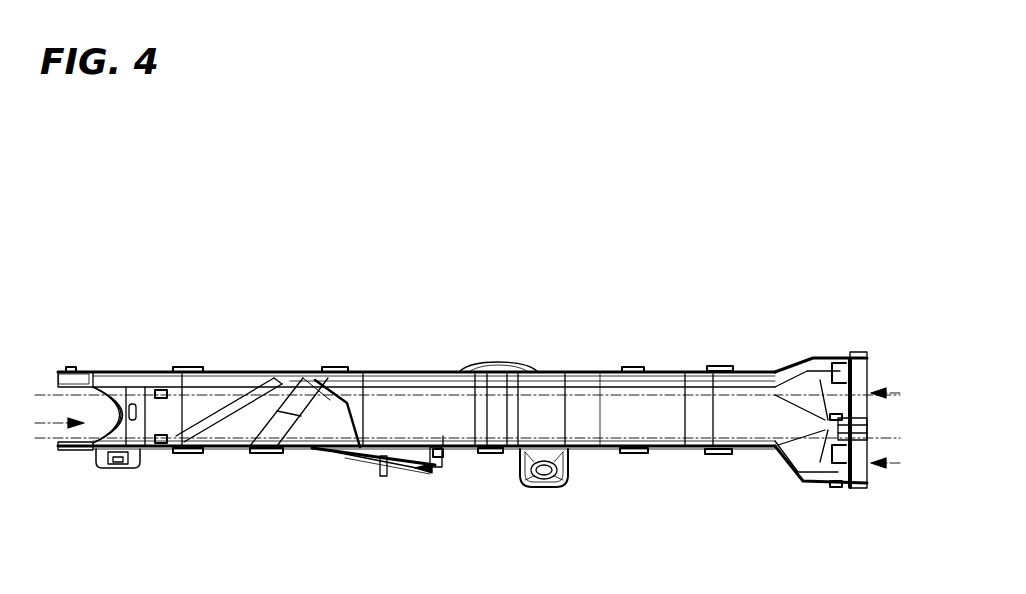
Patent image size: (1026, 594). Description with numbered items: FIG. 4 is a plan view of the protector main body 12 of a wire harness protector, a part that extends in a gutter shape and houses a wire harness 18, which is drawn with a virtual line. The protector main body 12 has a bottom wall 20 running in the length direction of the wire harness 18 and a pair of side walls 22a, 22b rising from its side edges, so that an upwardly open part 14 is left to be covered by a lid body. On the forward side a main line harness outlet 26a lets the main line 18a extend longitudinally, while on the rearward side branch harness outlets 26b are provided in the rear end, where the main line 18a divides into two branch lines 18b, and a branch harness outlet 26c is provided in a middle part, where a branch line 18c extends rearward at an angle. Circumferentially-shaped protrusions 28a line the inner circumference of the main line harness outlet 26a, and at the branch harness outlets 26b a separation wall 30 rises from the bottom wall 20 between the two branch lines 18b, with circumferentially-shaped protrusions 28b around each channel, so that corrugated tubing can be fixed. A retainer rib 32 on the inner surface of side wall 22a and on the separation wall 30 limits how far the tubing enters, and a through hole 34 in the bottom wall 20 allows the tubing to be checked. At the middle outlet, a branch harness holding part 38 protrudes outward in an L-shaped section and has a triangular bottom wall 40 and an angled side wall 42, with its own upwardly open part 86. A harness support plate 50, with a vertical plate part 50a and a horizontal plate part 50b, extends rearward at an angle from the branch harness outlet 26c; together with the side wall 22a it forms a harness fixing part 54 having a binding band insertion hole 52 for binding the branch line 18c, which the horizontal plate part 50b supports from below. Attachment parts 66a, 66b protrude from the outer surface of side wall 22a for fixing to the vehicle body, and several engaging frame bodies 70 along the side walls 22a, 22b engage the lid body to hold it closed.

The protector main body 12 is at (490, 240).
The upwardly open part 14 is at (610, 440).
The wire harness 18 is at (640, 405).
The main line 18a is at (62, 418).
The branch lines 18b is at (820, 383).
The branch line 18c is at (442, 472).
The bottom wall 20 is at (378, 405).
The side wall 22a is at (225, 450).
The side wall 22b is at (233, 372).
The main line harness outlet 26a is at (57, 430).
The branch harness outlets 26b is at (880, 393).
The branch harness outlet 26c is at (424, 470).
The circumferentially-shaped protrusions 28a is at (112, 415).
The circumferentially-shaped protrusions 28b is at (863, 420).
The separation wall 30 is at (867, 437).
The retainer rib 32 is at (162, 446).
The through hole 34 is at (133, 417).
The branch harness holding part 38 is at (303, 482).
The bottom wall 40 is at (365, 457).
The side wall 42 is at (372, 462).
The harness support plate 50 is at (357, 522).
The vertical plate part 50a is at (412, 465).
The horizontal plate part 50b is at (418, 470).
The binding band insertion hole 52 is at (437, 450).
The harness fixing part 54 is at (443, 425).
The attachment part 66a is at (545, 487).
The attachment part 66b is at (108, 466).
The engaging frame body 70 is at (72, 368).
The upwardly open part 86 is at (388, 460).